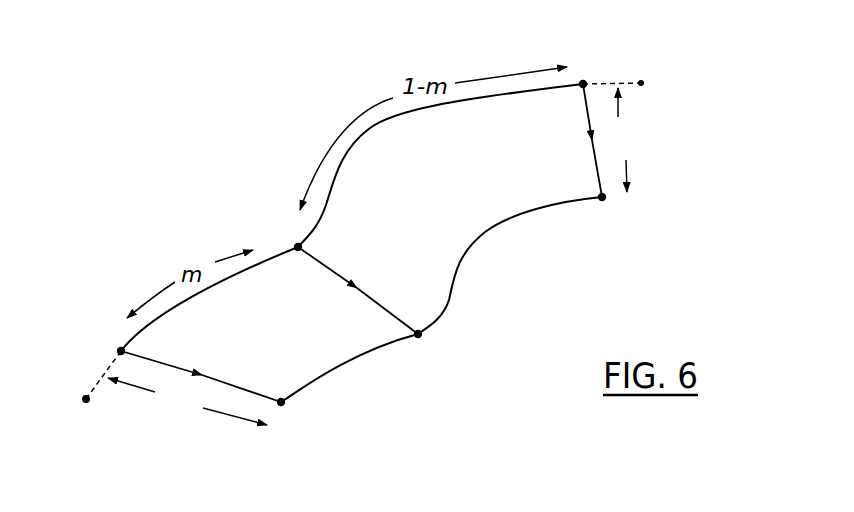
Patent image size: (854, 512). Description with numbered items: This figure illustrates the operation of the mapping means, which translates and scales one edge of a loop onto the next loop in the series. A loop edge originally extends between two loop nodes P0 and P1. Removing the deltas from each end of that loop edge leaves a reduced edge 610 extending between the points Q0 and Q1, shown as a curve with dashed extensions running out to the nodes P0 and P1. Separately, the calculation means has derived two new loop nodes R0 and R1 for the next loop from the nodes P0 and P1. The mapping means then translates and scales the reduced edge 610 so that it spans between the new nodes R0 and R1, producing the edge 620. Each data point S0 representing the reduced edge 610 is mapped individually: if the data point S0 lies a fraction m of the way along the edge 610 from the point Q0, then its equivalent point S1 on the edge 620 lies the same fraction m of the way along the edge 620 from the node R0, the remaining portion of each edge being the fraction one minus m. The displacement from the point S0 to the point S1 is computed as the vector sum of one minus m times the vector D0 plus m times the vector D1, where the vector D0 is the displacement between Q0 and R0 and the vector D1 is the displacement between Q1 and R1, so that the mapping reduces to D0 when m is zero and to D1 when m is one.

The reduced edge 610 is at (508, 92).
The edge 620 is at (488, 228).
The loop node P0 is at (79, 416).
The point Q0 is at (104, 338).
The new loop node R0 is at (296, 415).
The data point S0 is at (284, 234).
The equivalent point S1 is at (434, 348).
The point Q1 is at (593, 68).
The new loop node R1 is at (613, 214).
The loop node P1 is at (660, 84).
The vector D0 is at (187, 401).
The vector D1 is at (632, 140).